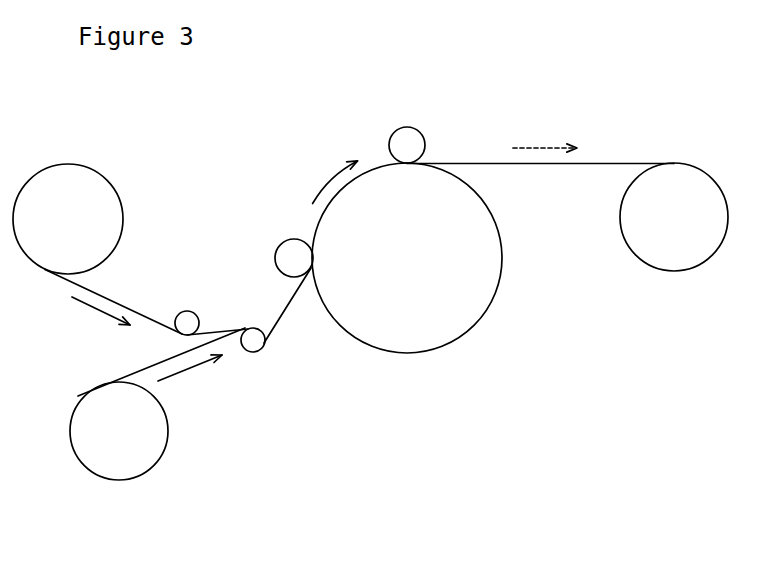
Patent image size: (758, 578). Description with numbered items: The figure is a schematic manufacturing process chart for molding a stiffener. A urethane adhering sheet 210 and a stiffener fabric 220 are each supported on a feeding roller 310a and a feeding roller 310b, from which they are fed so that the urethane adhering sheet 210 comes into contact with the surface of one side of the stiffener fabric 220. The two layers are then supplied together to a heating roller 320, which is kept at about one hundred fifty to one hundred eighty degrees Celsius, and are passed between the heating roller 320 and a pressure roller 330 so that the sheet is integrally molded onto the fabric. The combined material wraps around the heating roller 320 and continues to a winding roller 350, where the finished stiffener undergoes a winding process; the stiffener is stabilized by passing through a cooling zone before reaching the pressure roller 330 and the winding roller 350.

The feeding roller 310a is at (67, 175).
The feeding roller 310b is at (120, 465).
The urethane adhering sheet 210 is at (125, 306).
The stiffener fabric 220 is at (157, 364).
The pressure roller 330 is at (292, 250).
The heating roller 320 is at (403, 337).
The winding roller 350 is at (675, 262).